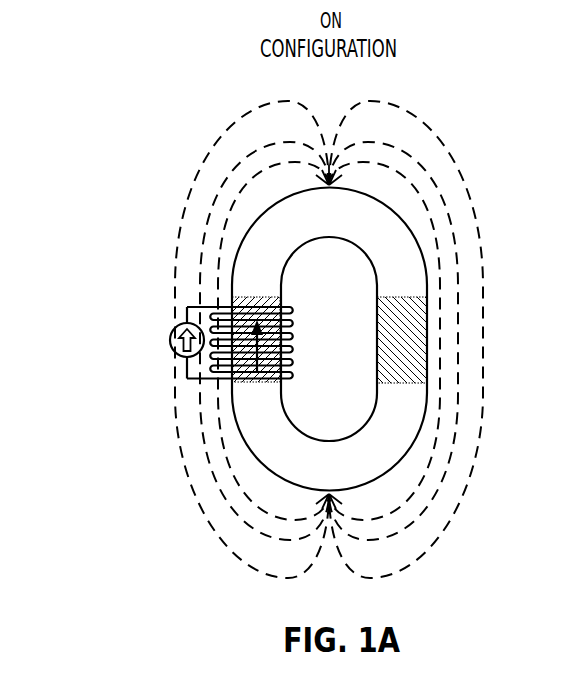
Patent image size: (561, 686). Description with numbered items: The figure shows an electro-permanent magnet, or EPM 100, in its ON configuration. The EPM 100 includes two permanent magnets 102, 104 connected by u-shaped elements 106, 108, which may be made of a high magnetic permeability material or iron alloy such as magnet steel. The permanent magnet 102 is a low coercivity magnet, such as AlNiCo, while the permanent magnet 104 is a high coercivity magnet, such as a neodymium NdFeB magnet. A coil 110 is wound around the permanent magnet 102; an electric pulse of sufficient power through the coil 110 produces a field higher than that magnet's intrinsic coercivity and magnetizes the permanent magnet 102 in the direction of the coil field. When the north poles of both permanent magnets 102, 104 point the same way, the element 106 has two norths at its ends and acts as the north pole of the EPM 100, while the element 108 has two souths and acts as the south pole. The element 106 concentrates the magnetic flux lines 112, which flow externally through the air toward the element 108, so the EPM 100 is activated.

The electro-permanent magnet 100 is at (176, 137).
The permanent magnet 102 is at (232, 298).
The permanent magnet 104 is at (412, 328).
The u-shaped element 106 is at (315, 225).
The u-shaped element 108 is at (310, 447).
The coil 110 is at (291, 323).
The magnetic flux lines 112 is at (434, 130).